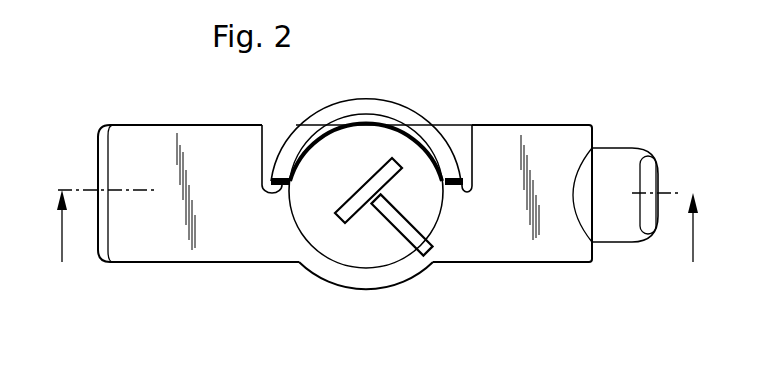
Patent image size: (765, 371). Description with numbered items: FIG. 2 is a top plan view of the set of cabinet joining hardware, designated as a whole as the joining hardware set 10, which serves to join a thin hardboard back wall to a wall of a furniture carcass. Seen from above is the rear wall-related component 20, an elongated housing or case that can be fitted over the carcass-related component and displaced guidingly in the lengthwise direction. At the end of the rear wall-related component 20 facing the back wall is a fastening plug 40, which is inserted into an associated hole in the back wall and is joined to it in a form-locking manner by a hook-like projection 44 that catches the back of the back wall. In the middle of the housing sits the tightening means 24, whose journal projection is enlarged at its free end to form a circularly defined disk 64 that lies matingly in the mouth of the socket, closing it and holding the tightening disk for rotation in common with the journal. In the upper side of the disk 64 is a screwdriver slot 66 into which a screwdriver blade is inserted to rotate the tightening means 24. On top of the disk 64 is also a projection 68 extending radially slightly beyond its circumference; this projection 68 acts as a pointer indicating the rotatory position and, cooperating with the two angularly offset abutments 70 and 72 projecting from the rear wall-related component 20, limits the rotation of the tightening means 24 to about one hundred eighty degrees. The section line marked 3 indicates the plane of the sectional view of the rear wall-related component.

The joining hardware set 10 is at (221, 284).
The rear wall-related component 20 is at (169, 112).
The tightening means 24 is at (400, 86).
The fastening plug 40 is at (615, 150).
The hook-like projection 44 is at (644, 230).
The circularly defined disk 64 is at (343, 164).
The screwdriver slot 66 is at (336, 221).
The projection 68 is at (409, 242).
The abutment 70 is at (472, 172).
The abutment 72 is at (262, 125).
The section line 3- 3 is at (378, 213).